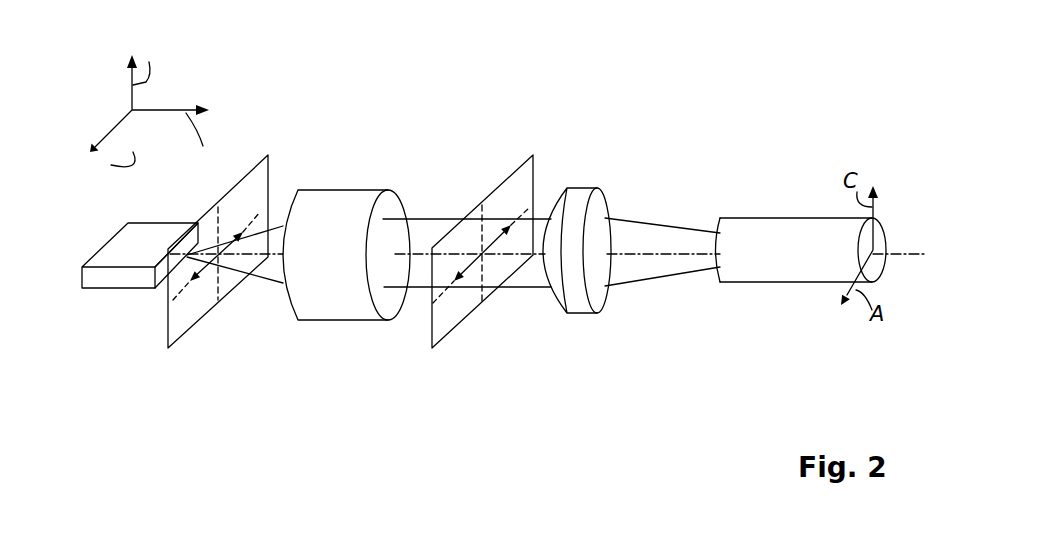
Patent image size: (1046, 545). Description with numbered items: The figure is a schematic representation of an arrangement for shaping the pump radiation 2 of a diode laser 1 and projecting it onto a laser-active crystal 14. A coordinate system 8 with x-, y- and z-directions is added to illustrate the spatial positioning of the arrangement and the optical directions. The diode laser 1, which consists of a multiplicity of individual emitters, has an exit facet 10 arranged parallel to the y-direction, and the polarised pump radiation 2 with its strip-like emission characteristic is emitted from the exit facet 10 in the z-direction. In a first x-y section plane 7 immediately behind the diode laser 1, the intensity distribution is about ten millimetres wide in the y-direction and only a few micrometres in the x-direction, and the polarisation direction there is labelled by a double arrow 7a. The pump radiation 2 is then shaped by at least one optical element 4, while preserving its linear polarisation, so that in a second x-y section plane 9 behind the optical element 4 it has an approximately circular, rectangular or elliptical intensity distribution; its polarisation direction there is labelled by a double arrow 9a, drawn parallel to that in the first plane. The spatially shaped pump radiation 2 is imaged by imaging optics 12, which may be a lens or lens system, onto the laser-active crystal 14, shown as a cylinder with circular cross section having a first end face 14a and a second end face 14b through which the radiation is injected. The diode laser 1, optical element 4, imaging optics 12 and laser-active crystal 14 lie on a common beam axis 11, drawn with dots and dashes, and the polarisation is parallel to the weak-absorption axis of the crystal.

The diode laser 1 is at (140, 230).
The pump radiation 2 is at (441, 218).
The optical element 4 is at (310, 317).
The first x-y section plane 7 is at (186, 337).
The double arrow 7a is at (203, 265).
The coordinate system 8 is at (135, 115).
The second x-y section plane 9 is at (445, 347).
The double arrow 9a is at (490, 258).
The exit facet 10 is at (165, 280).
The common beam axis 11 is at (668, 253).
The imaging optics 12 is at (582, 307).
The laser-active crystal 14 is at (758, 273).
The first end face 14a is at (719, 232).
The second end face 14b is at (878, 242).